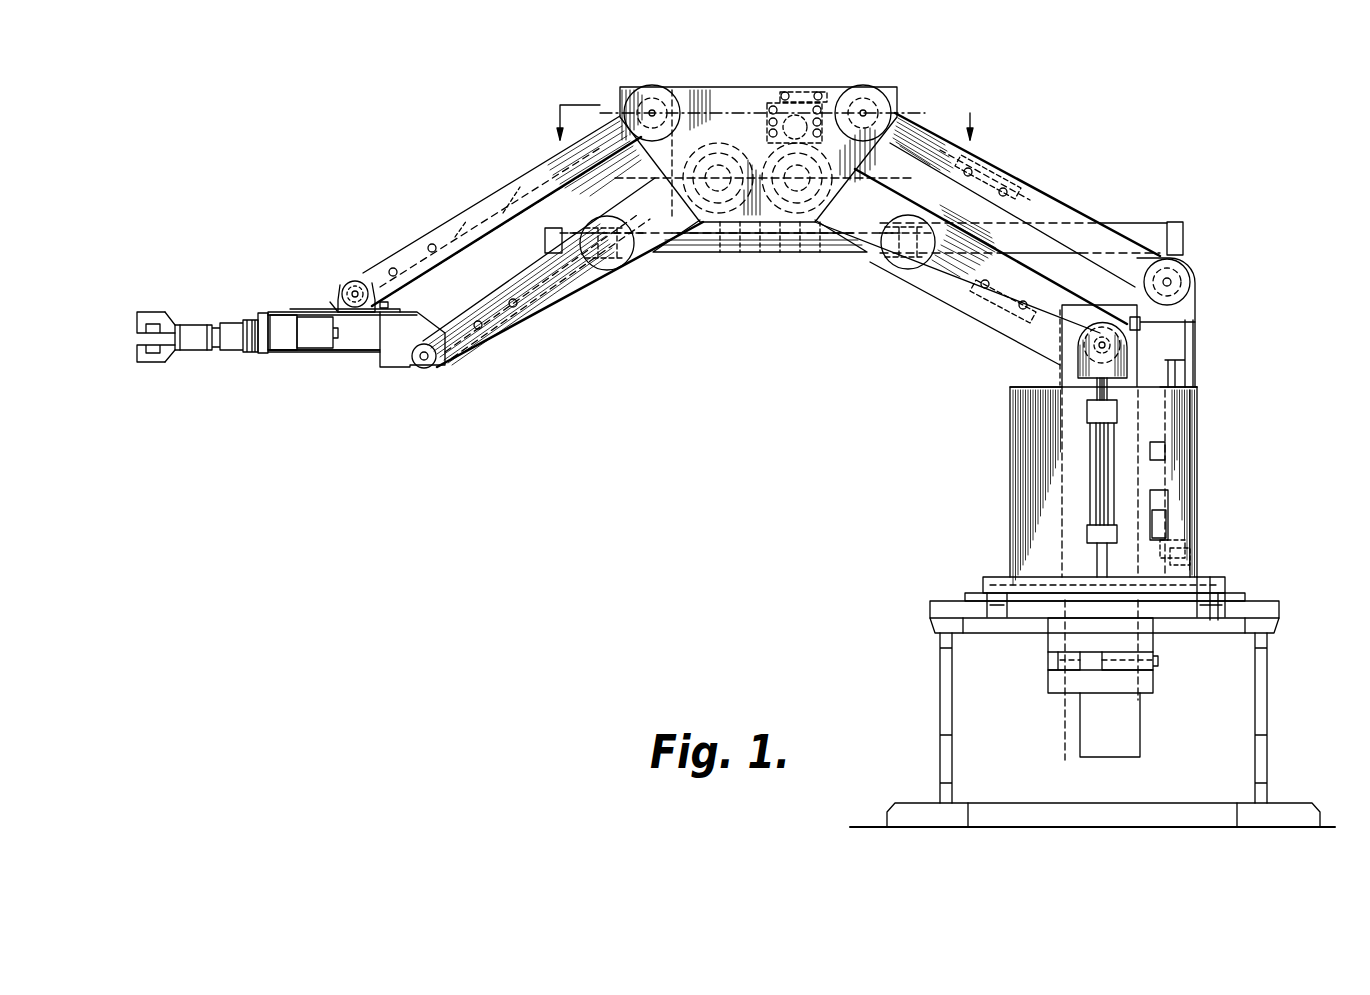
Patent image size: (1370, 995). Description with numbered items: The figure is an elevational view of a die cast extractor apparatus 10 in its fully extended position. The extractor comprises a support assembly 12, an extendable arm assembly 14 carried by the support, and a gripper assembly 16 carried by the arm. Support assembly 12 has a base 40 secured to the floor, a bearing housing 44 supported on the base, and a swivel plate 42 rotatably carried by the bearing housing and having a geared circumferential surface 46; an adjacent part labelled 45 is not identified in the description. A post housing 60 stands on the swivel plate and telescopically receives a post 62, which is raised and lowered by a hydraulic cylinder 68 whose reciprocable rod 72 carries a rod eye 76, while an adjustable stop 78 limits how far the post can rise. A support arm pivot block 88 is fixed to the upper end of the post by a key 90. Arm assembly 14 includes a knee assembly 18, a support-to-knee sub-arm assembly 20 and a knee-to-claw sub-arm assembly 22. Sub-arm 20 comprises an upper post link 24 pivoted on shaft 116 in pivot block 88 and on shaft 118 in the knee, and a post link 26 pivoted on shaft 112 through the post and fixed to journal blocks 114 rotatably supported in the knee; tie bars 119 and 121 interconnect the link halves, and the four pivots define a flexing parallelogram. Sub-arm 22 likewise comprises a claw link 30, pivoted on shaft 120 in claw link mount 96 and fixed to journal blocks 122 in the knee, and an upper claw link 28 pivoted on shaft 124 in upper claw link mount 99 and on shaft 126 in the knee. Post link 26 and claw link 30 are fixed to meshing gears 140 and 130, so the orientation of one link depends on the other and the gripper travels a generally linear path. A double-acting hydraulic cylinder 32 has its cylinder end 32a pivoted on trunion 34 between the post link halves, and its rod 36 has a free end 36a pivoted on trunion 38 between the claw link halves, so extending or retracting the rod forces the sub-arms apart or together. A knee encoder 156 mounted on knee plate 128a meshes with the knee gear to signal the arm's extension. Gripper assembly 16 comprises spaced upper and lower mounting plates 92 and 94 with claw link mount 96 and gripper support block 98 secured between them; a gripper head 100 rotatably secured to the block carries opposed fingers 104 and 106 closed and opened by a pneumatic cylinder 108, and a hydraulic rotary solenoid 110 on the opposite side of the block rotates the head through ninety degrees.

The die cast extractor apparatus 10 is at (1292, 246).
The support assembly 12 is at (1125, 537).
The extendable arm assembly 14 is at (740, 201).
The gripper assembly 16 is at (259, 308).
The knee assembly 18 is at (763, 168).
The support-to-knee sub-arm assembly 20 is at (999, 239).
The knee-to-claw sub-arm assembly 22 is at (500, 252).
The upper post link 24 is at (1052, 208).
The post link 26 is at (945, 283).
The upper claw link 28 is at (530, 178).
The claw link 30 is at (552, 301).
The hydraulic cylinder 32 is at (1130, 225).
The cylinder end 32a is at (900, 266).
The trunion 34 is at (895, 262).
The rod 36 is at (770, 246).
The free end 36a is at (627, 262).
The trunion 38 is at (608, 262).
The base 40 is at (1270, 676).
The swivel plate 42 is at (1226, 578).
The bearing housing 44 is at (1282, 609).
The intermediate plate 45 is at (1245, 597).
The geared circumferential surface 46 is at (983, 586).
The post housing 60 is at (1200, 408).
The post 62 is at (1060, 382).
The hydraulic cylinder 68 is at (1105, 487).
The reciprocable rod 72 is at (1098, 393).
The rod eye 76 is at (1092, 362).
The mechanical adjustable stop 78 is at (1200, 386).
The support arm pivot block 88 is at (1102, 345).
The key 90 is at (1141, 324).
The upper mounting plate 92 is at (308, 312).
The lower mounting plate 94 is at (300, 355).
The claw link mount 96 is at (395, 330).
The gripper support block 98 is at (283, 340).
The upper claw link mount 99 is at (340, 290).
The gripper head 100 is at (200, 352).
The finger 104 is at (138, 318).
The finger 106 is at (138, 360).
The pneumatic cylinder 108 is at (240, 350).
The hydraulic rotary solenoid 110 is at (312, 346).
The shaft 112 is at (1196, 350).
The journal block 114 is at (822, 240).
The shaft 116 is at (1170, 283).
The shaft 118 is at (895, 99).
The tie bar 119 is at (975, 305).
The shaft 120 is at (446, 362).
The tie bar 121 is at (1015, 170).
The journal block 122 is at (700, 238).
The shaft 124 is at (356, 290).
The shaft 126 is at (651, 98).
The knee plate 128a is at (693, 95).
The gear 130 is at (738, 238).
The gear 140 is at (797, 246).
The knee encoder 156 is at (809, 92).